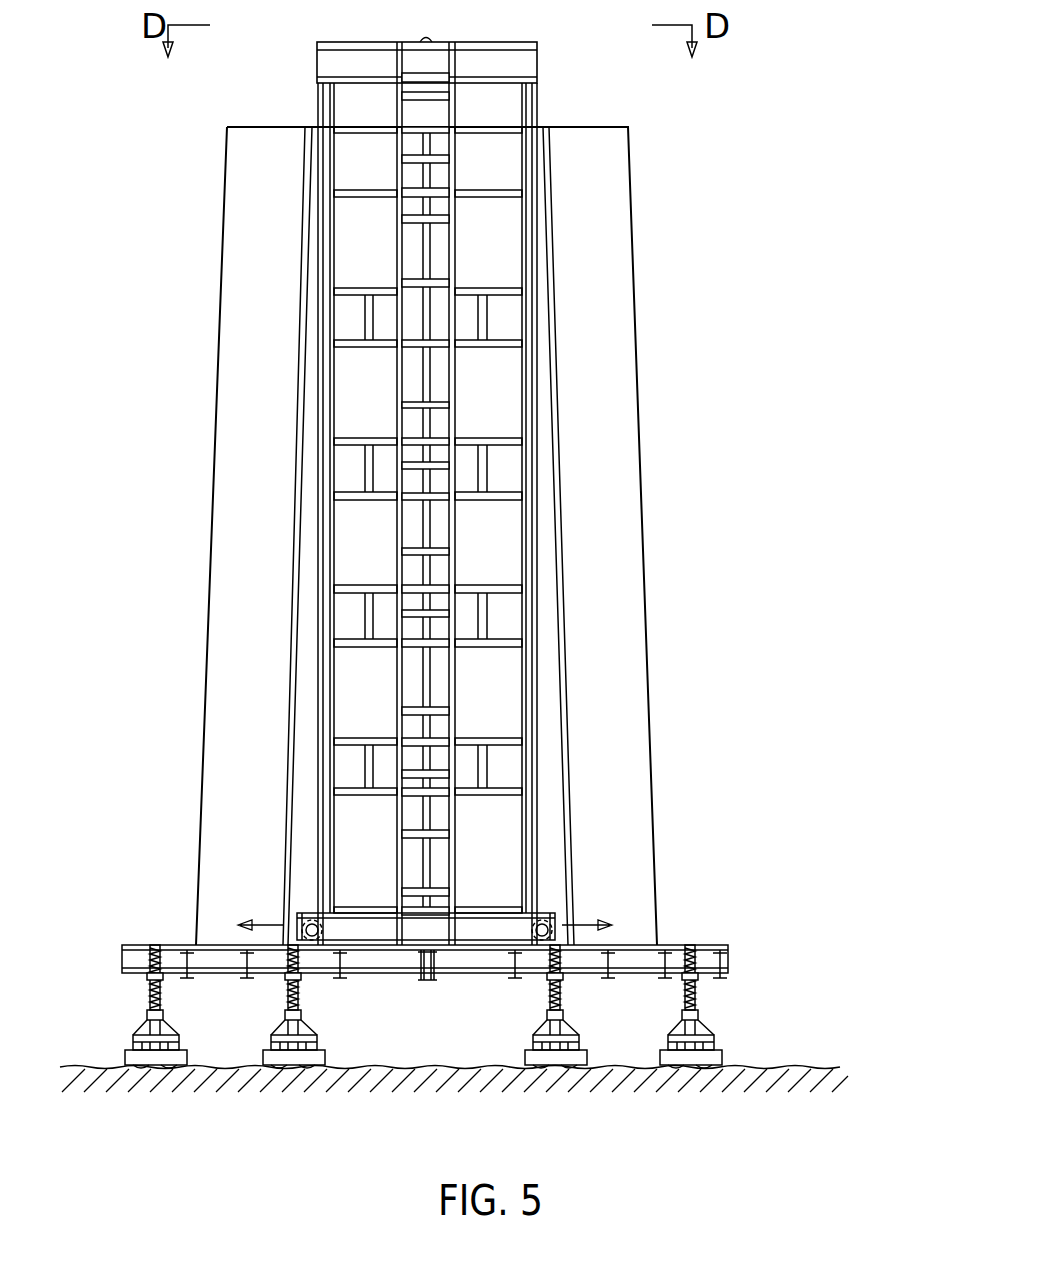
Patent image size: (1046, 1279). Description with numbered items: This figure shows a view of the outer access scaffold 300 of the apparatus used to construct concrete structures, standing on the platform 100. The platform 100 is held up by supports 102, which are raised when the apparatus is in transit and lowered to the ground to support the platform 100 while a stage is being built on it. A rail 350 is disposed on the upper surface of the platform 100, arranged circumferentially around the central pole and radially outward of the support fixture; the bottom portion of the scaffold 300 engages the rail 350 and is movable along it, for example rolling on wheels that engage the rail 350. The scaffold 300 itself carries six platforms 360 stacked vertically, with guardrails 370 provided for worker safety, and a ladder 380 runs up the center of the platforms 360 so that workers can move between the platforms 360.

The access scaffold 300 is at (457, 492).
The ladder 380 is at (455, 460).
The guardrails 370 is at (494, 582).
The platforms 360 is at (507, 788).
The rail 350 is at (547, 915).
The platform 100 is at (728, 950).
The supports 102 is at (150, 1010).